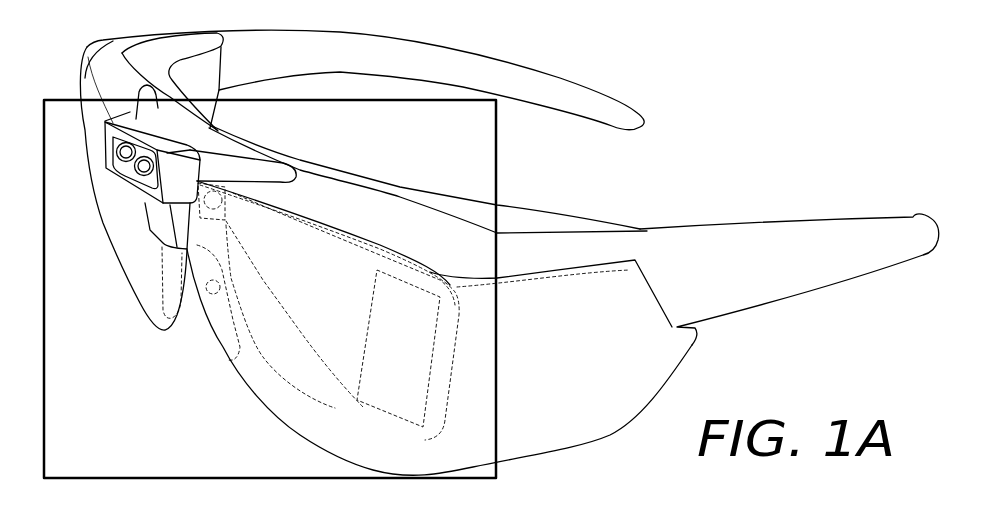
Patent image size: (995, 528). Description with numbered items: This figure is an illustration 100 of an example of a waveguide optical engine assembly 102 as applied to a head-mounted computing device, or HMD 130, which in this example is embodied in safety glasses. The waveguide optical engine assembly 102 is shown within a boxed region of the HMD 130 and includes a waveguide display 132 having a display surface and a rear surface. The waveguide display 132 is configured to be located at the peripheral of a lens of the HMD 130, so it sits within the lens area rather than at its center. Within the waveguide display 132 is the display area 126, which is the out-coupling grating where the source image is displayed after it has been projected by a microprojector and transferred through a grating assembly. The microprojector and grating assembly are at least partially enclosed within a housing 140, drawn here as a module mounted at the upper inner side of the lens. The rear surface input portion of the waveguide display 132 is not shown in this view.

The illustration 100 is at (772, 105).
The waveguide optical engine assembly 102 is at (213, 480).
The display area 126 is at (418, 433).
The HMD 130 is at (487, 475).
The waveguide display 132 is at (323, 403).
The housing 140 is at (104, 143).